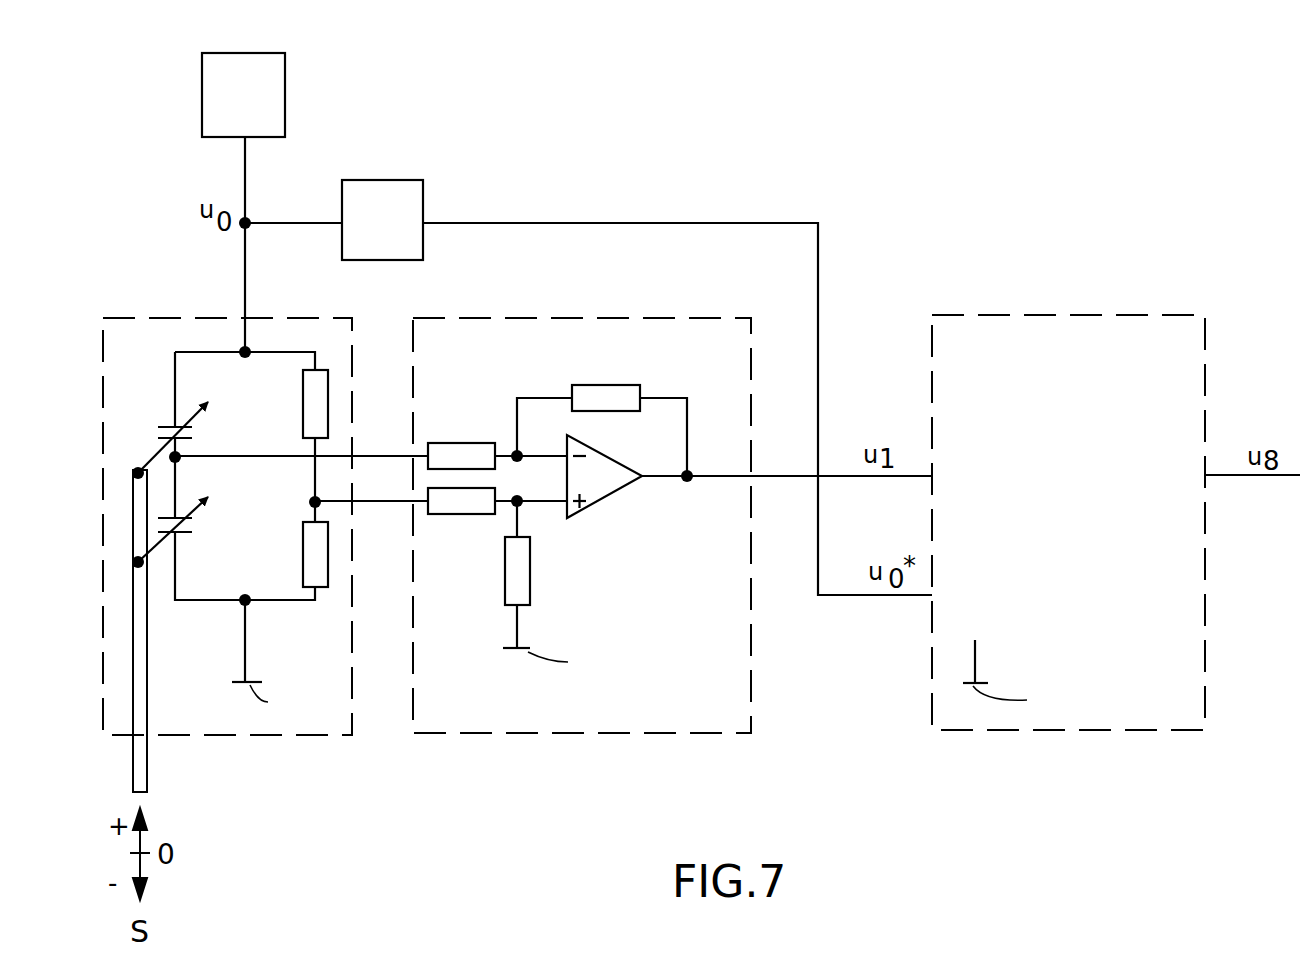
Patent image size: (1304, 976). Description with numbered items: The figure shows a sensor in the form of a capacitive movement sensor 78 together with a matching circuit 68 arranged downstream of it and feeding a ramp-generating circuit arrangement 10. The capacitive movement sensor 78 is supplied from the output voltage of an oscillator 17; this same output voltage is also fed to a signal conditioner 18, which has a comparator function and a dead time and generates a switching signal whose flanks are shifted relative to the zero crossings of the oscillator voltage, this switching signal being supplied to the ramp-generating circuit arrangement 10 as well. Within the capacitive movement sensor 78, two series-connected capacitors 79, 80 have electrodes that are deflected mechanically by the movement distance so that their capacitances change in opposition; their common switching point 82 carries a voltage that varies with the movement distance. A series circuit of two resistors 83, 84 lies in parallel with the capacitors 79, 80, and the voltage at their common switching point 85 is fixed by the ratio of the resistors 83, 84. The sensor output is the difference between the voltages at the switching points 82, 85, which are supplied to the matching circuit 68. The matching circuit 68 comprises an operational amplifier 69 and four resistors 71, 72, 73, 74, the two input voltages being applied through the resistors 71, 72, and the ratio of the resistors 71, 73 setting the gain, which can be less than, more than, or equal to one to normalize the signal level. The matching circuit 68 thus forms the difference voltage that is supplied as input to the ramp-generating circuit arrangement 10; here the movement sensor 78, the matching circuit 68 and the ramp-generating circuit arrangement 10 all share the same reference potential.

The ramp-generating circuit arrangement 10 is at (1053, 730).
The oscillator 17 is at (285, 92).
The signal conditioner 18 is at (393, 180).
The matching circuit 68 is at (672, 569).
The operational amplifier 69 is at (617, 493).
The resistor 71 is at (465, 438).
The resistor 72 is at (450, 514).
The resistor 73 is at (605, 378).
The resistor 74 is at (530, 573).
The capacitive movement sensor 78 is at (265, 566).
The capacitor 79 is at (172, 420).
The capacitor 80 is at (183, 540).
The switching point 82 is at (182, 452).
The resistor 83 is at (328, 393).
The resistor 84 is at (328, 587).
The switching point 85 is at (313, 502).